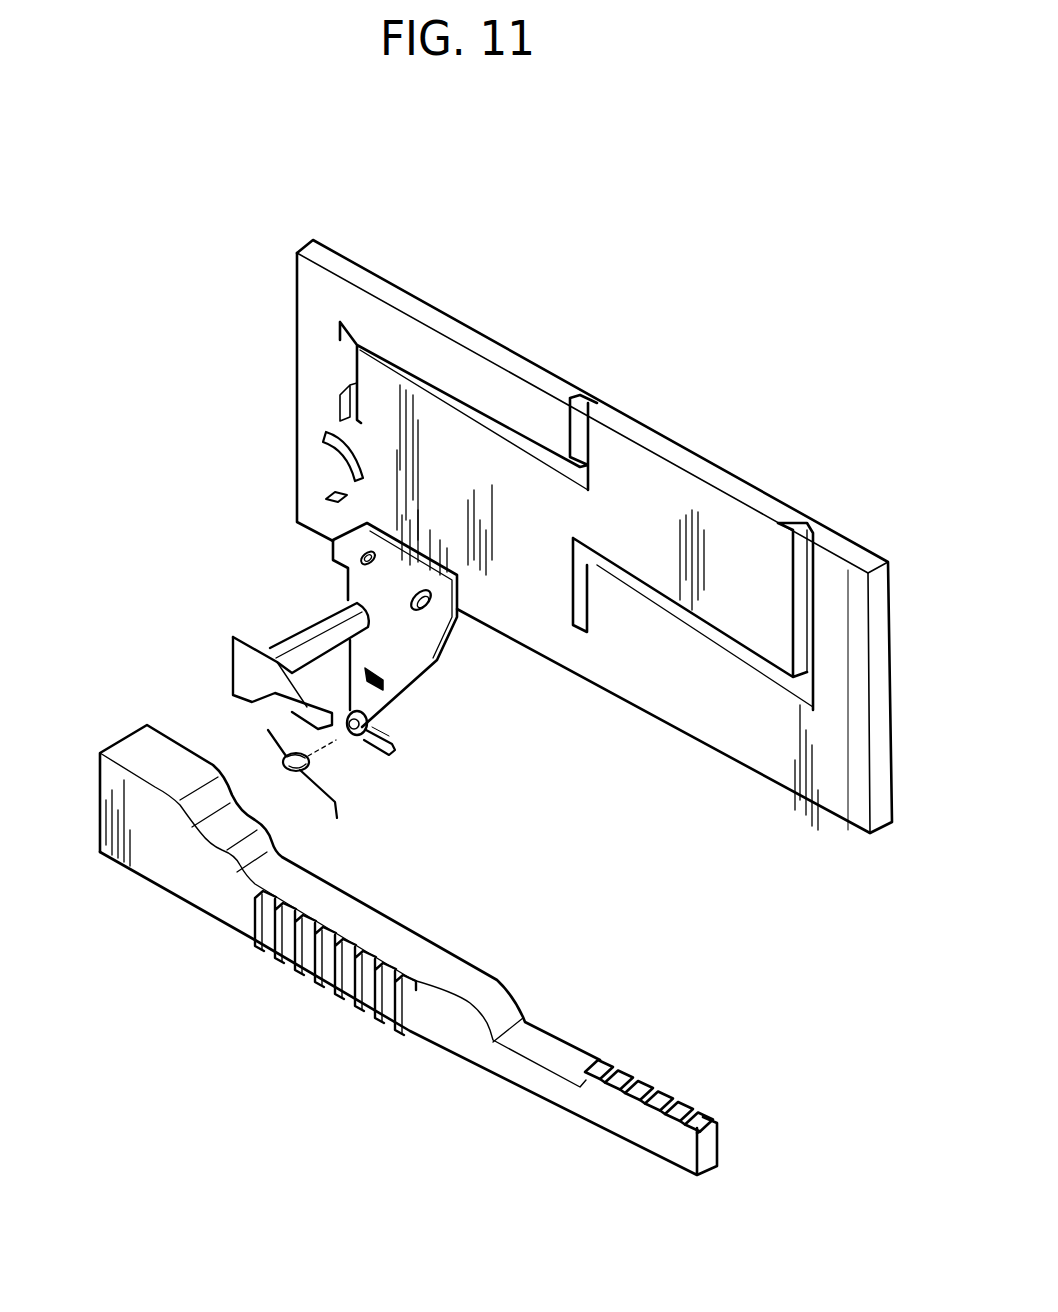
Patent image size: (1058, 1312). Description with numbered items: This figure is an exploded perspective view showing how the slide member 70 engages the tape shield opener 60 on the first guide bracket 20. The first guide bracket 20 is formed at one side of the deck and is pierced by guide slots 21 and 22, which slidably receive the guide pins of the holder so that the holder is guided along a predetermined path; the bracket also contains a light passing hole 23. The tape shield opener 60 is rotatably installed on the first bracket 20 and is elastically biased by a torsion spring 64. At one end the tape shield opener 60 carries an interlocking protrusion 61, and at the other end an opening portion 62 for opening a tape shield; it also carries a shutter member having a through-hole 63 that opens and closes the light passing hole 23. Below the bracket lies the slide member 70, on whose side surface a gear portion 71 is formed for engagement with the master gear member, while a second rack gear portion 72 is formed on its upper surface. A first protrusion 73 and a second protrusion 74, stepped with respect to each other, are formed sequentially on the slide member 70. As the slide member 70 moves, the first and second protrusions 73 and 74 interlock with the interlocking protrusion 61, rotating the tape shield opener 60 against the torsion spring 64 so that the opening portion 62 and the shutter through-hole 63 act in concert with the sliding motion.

The first guide bracket 20 is at (680, 420).
The guide slot 21 is at (493, 428).
The guide slot 22 is at (713, 633).
The light passing hole 23 is at (340, 402).
The tape shield opener 60 is at (290, 572).
The interlocking protrusion 61 is at (395, 752).
The opening portion 62 is at (330, 733).
The through-hole 63 is at (433, 614).
The torsion spring 64 is at (282, 760).
The slide member 70 is at (497, 1100).
The gear portion 71 is at (297, 967).
The second rack gear portion 72 is at (670, 1087).
The first protrusion 73 is at (227, 833).
The second protrusion 74 is at (138, 758).